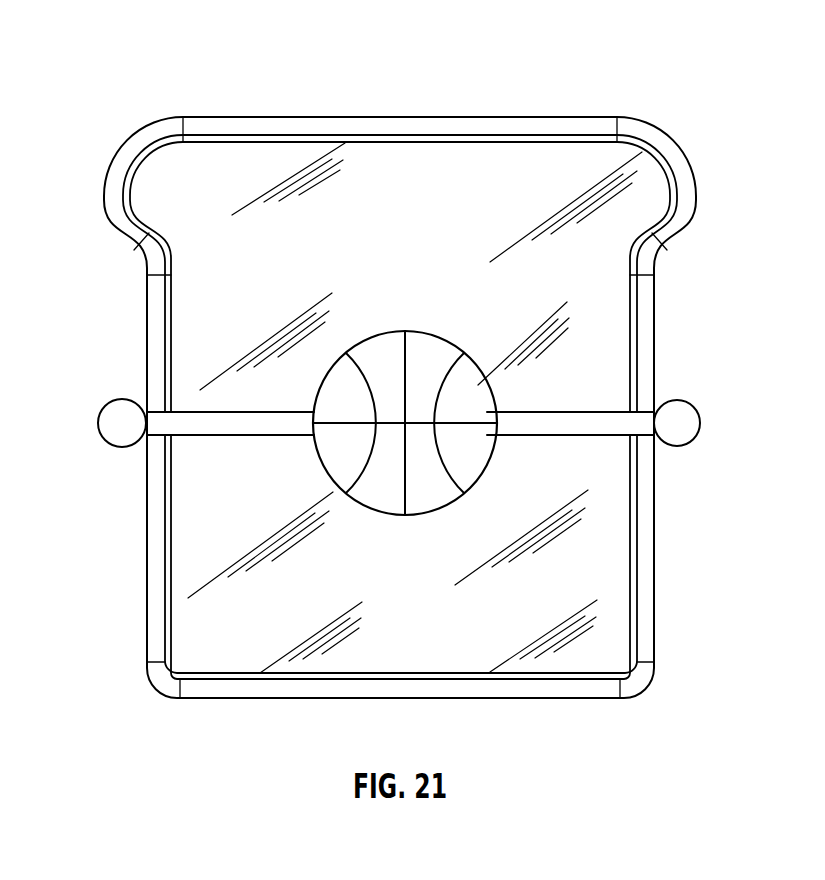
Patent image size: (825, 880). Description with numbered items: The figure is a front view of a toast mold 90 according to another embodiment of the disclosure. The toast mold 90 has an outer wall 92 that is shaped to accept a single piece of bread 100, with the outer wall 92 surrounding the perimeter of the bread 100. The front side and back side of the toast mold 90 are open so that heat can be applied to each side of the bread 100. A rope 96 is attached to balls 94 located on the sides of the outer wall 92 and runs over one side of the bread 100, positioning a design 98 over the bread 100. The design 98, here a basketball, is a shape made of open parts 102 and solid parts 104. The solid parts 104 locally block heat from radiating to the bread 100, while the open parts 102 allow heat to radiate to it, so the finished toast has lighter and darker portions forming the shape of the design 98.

The toast mold 90 is at (435, 388).
The outer wall 92 is at (705, 192).
The balls 94 is at (688, 423).
The rope 96 is at (572, 424).
The design 98 is at (471, 404).
The bread 100 is at (455, 162).
The open parts 102 is at (408, 465).
The solid parts 104 is at (385, 368).